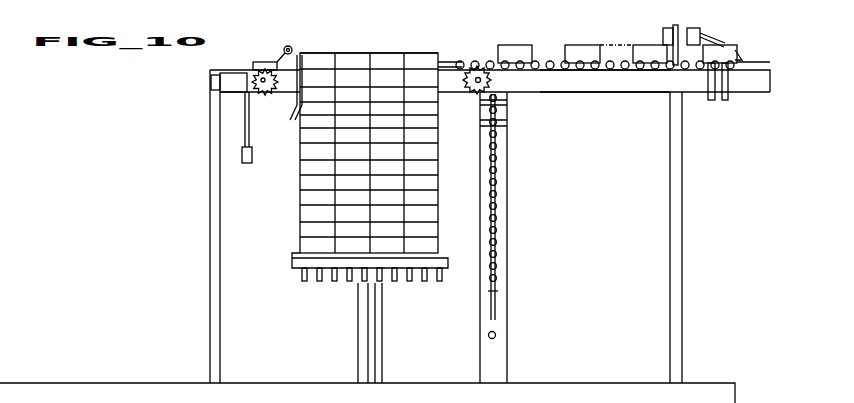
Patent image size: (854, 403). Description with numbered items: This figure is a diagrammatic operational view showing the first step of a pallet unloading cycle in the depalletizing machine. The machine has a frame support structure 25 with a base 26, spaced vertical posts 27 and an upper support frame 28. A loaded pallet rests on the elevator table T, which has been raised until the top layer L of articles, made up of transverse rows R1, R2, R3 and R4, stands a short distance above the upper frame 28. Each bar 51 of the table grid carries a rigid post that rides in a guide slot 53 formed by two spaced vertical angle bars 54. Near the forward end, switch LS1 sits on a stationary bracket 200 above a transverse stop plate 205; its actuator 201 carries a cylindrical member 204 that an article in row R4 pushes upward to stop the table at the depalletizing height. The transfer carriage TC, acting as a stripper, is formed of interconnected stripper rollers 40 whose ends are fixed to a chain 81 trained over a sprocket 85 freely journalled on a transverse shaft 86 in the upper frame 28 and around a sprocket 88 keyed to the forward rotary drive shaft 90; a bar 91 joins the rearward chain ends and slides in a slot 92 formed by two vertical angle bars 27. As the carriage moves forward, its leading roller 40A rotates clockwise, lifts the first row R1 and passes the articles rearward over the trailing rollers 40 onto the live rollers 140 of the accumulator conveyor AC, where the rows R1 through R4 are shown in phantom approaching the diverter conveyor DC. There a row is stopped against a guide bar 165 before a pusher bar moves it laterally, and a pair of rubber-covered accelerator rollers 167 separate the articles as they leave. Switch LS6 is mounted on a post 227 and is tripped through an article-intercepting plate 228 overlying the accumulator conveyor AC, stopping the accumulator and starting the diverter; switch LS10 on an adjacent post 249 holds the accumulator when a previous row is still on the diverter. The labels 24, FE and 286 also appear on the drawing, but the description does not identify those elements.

The frame 24 is at (206, 110).
The frame support structure 25 is at (206, 200).
The base 26 is at (292, 382).
The vertical posts 27 is at (208, 270).
The upper support frame 28 is at (585, 88).
The stripper rollers 40 is at (497, 178).
The leading roller 40A is at (470, 65).
The bar 51 is at (291, 265).
The guide slot 53 is at (367, 312).
The vertical angle bars 54 is at (378, 327).
The chain 81 is at (246, 146).
The sprocket 85 is at (508, 101).
The transverse shaft 86 is at (482, 81).
The sprocket 88 is at (262, 95).
The forward transverse rotary drive shaft 90 is at (233, 82).
The bar 91 is at (500, 291).
The slot 92 is at (496, 335).
The transverse rollers 140 is at (607, 70).
The guide bar 165 is at (742, 52).
The accelerator rollers 167 is at (725, 100).
The stationary bracket 200 is at (209, 74).
The actuator 201 is at (288, 45).
The cylindrical member 204 is at (305, 52).
The transverse stop plate 205 is at (283, 121).
The post 227 is at (712, 36).
The article-intercepting plate 228 is at (726, 46).
The post 249 is at (676, 24).
The bracket 286 is at (507, 124).
The accumulator conveyor AC is at (610, 60).
The diverter conveyor DC is at (733, 80).
The feed end FE is at (276, 57).
The layer L is at (438, 54).
The switch LS1 is at (252, 61).
The switch LS6 is at (690, 27).
The switch LS10 is at (662, 32).
The first row R1 is at (418, 54).
The second row R2 is at (380, 54).
The third row R3 is at (364, 54).
The fourth row R4 is at (325, 55).
The elevator table T is at (447, 283).
The transfer carriage TC is at (506, 197).